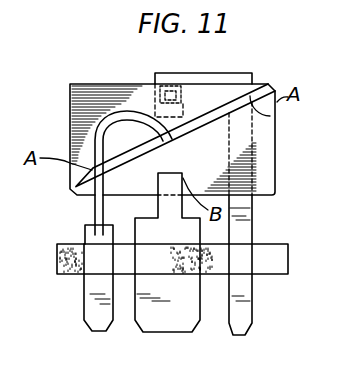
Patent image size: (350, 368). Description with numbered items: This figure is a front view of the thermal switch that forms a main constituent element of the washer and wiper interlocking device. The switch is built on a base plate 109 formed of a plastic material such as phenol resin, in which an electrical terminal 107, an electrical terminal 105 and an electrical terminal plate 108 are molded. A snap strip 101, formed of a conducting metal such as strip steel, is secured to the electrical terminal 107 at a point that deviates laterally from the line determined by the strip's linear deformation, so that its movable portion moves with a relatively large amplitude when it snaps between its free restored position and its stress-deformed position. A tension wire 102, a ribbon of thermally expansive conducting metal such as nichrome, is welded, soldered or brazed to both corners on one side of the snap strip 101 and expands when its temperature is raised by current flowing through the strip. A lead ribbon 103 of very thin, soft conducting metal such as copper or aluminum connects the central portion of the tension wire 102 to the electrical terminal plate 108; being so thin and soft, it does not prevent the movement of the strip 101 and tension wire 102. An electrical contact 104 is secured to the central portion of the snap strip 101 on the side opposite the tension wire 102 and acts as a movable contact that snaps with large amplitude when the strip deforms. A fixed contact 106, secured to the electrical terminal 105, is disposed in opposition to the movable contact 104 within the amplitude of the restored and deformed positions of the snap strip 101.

The snap strip 101 is at (70, 103).
The tension wire 102 is at (283, 118).
The lead ribbon 103 is at (95, 207).
The electrical contact 104 is at (157, 75).
The electrical terminal 105 is at (250, 75).
The fixed contact 106 is at (168, 87).
The electrical terminal 107 is at (153, 329).
The electrical terminal plate 108 is at (82, 318).
The base plate 109 is at (54, 258).